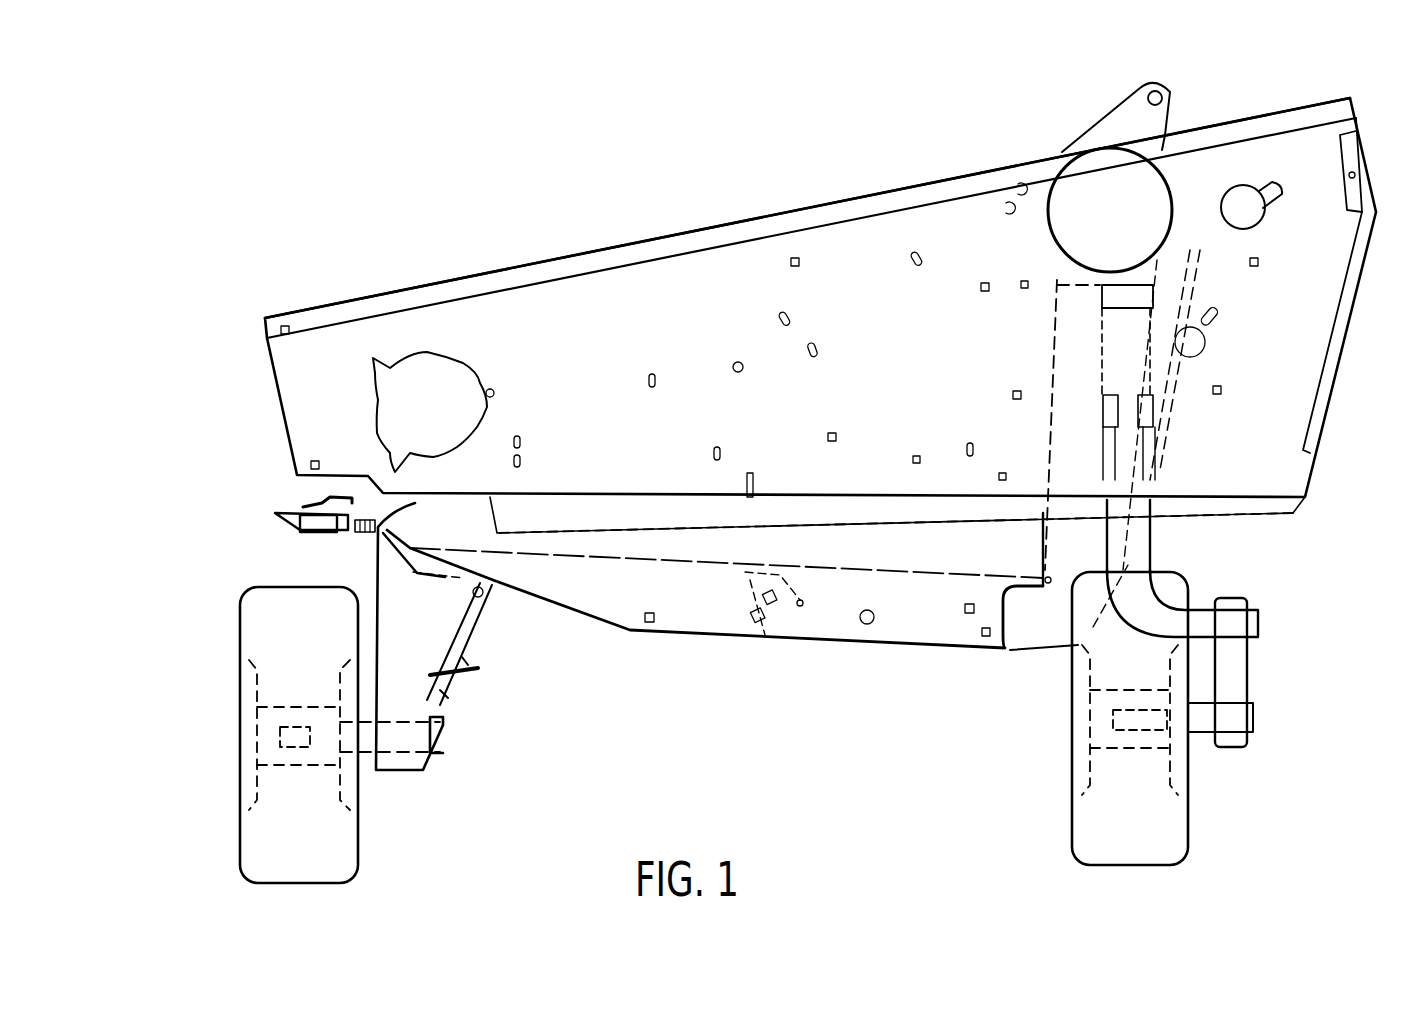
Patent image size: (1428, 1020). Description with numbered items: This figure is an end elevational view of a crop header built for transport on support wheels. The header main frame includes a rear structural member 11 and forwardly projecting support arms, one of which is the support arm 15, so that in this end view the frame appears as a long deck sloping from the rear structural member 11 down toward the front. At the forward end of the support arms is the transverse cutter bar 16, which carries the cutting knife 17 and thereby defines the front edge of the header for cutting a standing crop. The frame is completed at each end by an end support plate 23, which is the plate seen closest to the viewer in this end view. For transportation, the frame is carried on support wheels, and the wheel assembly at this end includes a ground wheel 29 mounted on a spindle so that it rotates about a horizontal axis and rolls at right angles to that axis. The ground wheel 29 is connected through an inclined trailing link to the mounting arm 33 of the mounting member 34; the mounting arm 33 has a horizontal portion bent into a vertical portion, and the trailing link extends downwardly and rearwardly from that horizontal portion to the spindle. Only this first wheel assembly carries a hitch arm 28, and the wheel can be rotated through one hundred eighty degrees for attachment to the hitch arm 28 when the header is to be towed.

The rear structural member 11 is at (1231, 97).
The support arm 15 is at (848, 632).
The transverse cutter bar 16 is at (367, 513).
The cutting knife 17 is at (275, 513).
The end support plate 23 is at (795, 170).
The hitch arm 28 is at (1260, 643).
The ground wheel 29 is at (1188, 860).
The mounting arm 33 is at (1185, 588).
The mounting member 34 is at (1152, 535).